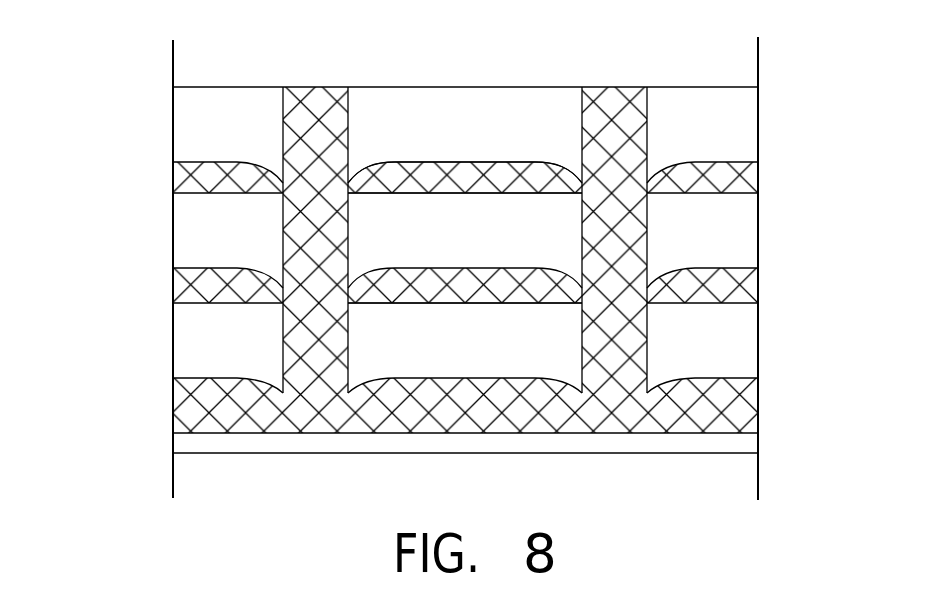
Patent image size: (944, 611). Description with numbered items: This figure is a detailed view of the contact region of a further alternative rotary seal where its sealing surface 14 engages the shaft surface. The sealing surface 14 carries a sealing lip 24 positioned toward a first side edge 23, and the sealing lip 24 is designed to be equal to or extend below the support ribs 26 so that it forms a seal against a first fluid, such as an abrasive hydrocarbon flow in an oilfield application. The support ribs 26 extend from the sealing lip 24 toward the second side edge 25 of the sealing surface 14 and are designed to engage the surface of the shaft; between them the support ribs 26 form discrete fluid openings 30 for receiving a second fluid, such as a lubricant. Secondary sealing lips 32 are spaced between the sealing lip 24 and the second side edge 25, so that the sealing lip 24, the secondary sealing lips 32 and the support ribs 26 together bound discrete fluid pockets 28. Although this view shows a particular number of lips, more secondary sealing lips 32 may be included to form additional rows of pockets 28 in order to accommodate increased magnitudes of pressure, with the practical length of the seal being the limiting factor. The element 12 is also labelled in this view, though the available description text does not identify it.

The upper substrate wall 12 is at (172, 138).
The lower substrate wall 14 is at (172, 356).
The base plate lower surface line 23 is at (598, 453).
The base layer 24 is at (245, 433).
The right support column 25 is at (678, 87).
The left support column 26 is at (320, 98).
The cavities between layers 28 is at (382, 347).
The upper cavity 30 is at (553, 127).
The hatched material layers 32 is at (172, 180).